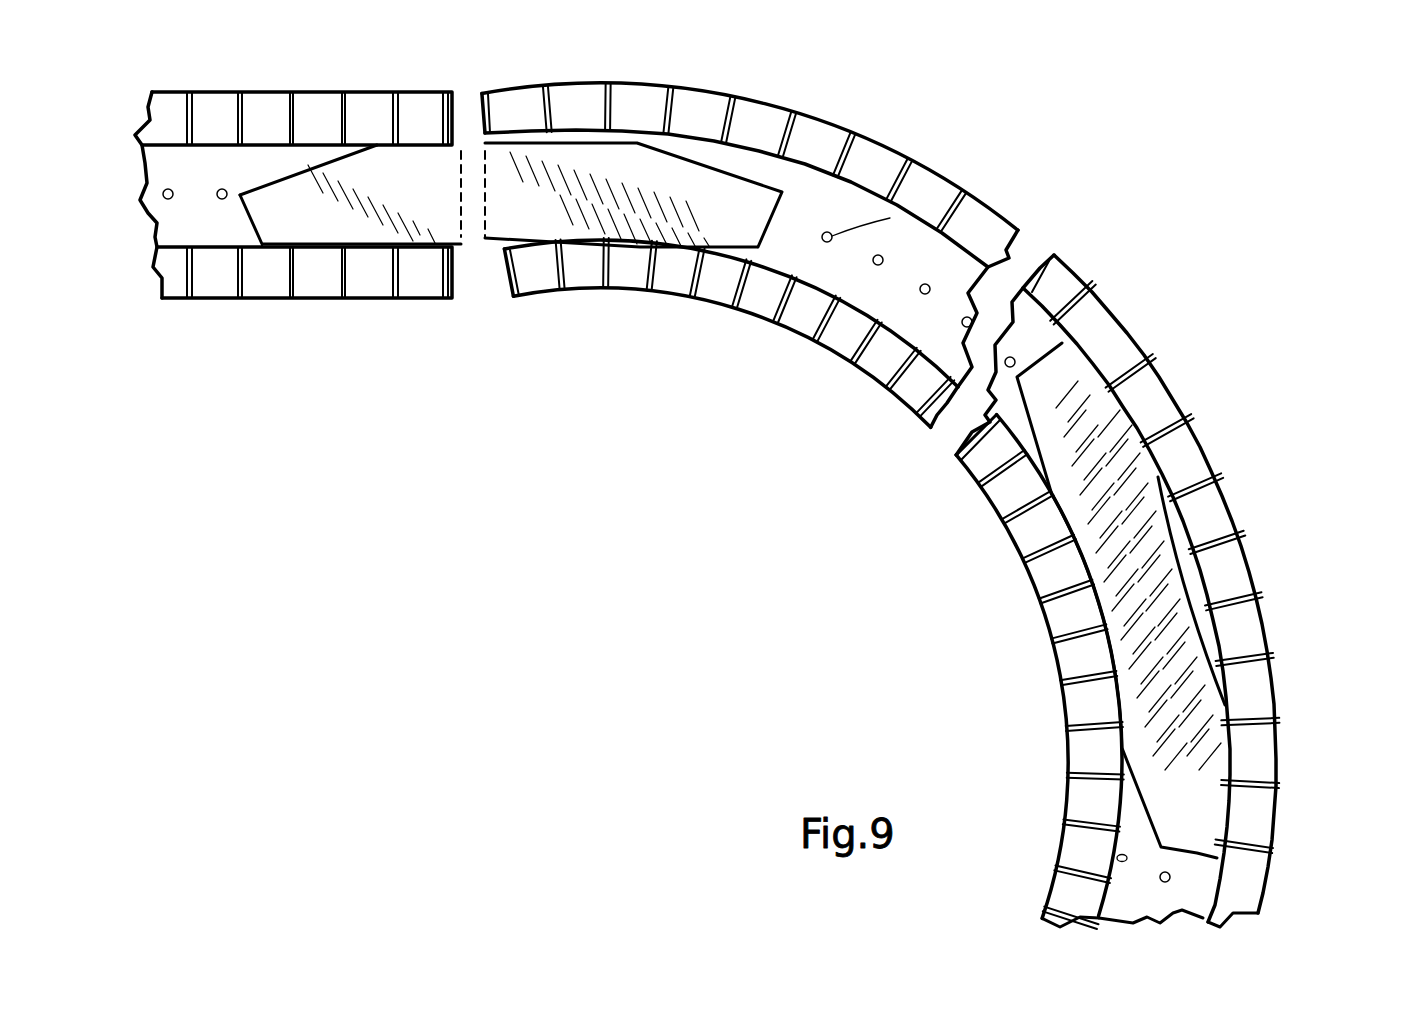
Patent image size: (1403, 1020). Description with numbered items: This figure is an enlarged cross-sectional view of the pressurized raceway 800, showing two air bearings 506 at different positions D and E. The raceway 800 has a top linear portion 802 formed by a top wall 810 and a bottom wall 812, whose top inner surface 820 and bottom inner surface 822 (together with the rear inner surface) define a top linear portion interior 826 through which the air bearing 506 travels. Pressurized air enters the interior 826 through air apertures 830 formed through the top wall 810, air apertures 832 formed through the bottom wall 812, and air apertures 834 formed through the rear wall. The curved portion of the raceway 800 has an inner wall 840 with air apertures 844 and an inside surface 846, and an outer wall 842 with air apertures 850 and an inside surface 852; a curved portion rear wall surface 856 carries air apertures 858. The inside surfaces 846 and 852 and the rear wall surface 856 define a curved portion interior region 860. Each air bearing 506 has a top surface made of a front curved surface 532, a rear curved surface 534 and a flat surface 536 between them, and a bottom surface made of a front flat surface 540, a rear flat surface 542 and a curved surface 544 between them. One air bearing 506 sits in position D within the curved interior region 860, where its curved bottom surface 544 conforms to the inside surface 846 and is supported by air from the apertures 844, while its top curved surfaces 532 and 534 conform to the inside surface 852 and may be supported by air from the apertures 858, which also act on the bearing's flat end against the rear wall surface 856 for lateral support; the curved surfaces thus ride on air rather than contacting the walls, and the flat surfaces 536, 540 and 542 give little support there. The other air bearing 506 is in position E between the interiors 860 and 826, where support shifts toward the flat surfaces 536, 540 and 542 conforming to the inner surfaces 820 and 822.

The pressurized raceway 800 is at (1108, 234).
The top linear portion 802 is at (283, 89).
The top wall 810 is at (372, 115).
The bottom wall 812 is at (364, 283).
The top inner surface 820 is at (208, 151).
The bottom inner surface 822 is at (220, 244).
The top linear portion interior 826 is at (176, 173).
The air apertures 830 is at (222, 150).
The air apertures 832 is at (292, 246).
The air apertures 834 is at (168, 200).
The inner wall 840 is at (1022, 547).
The outer wall 842 is at (1242, 708).
The air apertures 844 is at (983, 485).
The inside surface 846 is at (870, 305).
The air apertures 850 is at (1272, 788).
The inside surface 852 is at (1171, 878).
The curved portion rear wall surface 856 is at (1192, 862).
The air apertures 858 is at (925, 284).
The curved portion interior region 860 is at (1130, 895).
The air bearing 506 is at (437, 186).
The front curved surface 532 is at (740, 170).
The rear curved surface 534 is at (283, 167).
The flat surface 536 is at (468, 130).
The front flat surface 540 is at (672, 250).
The rear flat surface 542 is at (267, 246).
The curved surface 544 is at (540, 250).
The position E is at (607, 190).
The position D is at (1168, 635).